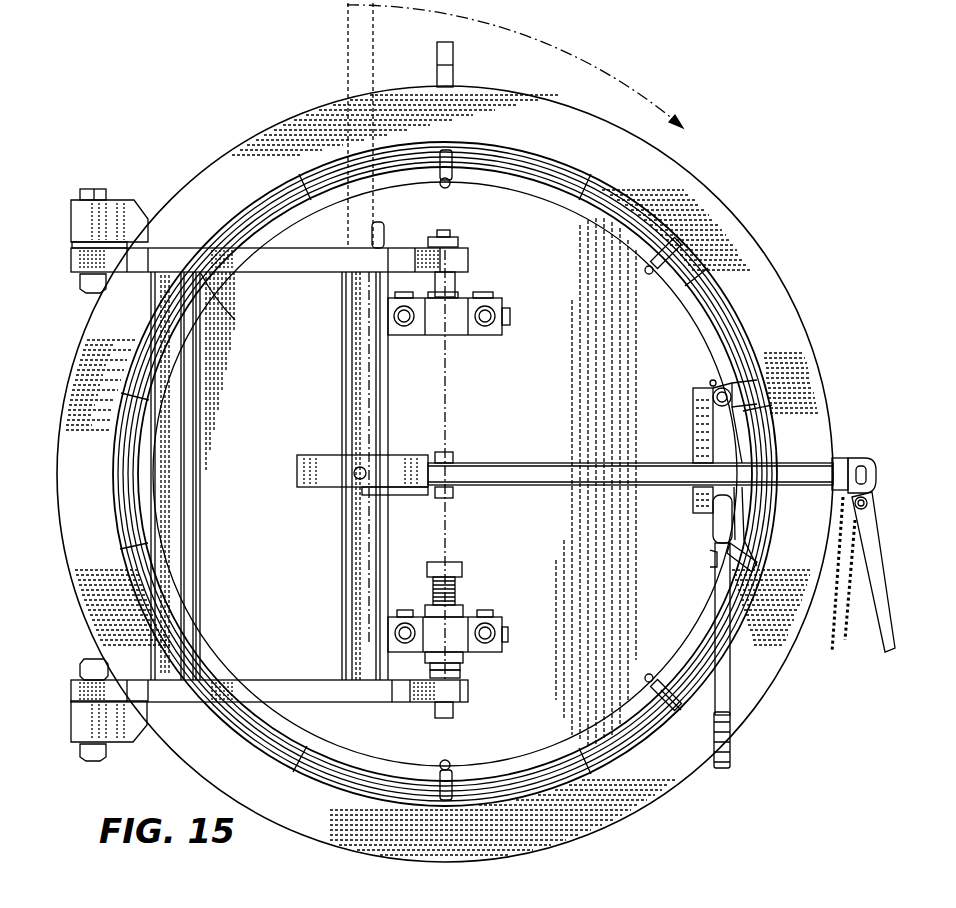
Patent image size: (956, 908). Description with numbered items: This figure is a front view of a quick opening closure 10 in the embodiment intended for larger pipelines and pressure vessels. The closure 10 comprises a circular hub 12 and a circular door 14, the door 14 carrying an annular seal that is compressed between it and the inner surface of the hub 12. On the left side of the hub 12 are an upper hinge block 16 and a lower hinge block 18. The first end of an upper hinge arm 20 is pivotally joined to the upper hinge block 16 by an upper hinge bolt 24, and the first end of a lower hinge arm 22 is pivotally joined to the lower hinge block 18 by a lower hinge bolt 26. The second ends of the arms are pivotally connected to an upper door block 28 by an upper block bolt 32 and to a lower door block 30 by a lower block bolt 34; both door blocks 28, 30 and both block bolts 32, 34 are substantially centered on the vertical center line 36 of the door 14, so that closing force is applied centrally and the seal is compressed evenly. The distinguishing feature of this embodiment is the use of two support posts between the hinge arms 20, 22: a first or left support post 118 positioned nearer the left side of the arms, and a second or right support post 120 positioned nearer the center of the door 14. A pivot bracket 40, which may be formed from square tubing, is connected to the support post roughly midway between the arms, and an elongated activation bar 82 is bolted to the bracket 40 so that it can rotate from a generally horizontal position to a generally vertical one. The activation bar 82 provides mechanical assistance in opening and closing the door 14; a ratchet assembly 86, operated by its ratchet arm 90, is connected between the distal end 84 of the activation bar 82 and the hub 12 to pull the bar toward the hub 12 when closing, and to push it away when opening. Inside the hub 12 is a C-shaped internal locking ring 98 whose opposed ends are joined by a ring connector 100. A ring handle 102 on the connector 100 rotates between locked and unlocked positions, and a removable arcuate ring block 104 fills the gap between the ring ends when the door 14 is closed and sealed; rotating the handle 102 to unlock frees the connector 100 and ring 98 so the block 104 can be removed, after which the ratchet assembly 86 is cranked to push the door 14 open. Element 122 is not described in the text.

The quick opening closure 10 is at (196, 156).
The circular hub 12 is at (697, 201).
The circular door 14 is at (672, 344).
The upper hinge block 16 is at (79, 224).
The lower hinge block 18 is at (76, 724).
The upper hinge arm 20 is at (132, 262).
The lower hinge arm 22 is at (200, 698).
The upper hinge bolt 24 is at (97, 187).
The lower hinge bolt 26 is at (80, 660).
The upper door block 28 is at (497, 329).
The lower door block 30 is at (501, 618).
The upper block bolt 32 is at (448, 278).
The lower block bolt 34 is at (455, 710).
The vertical center line 36 is at (449, 403).
The pivot bracket 40 is at (320, 492).
The activation bar 82 is at (346, 63).
The distal end of the activation bar 84 is at (842, 458).
The ratchet assembly 86 is at (879, 460).
The ratchet arm 90 is at (870, 527).
The internal locking ring 98 is at (557, 758).
The ring connector 100 is at (695, 412).
The ring handle 102 is at (730, 682).
The arcuate ring block 104 is at (737, 447).
The first or left support post 118 is at (188, 453).
The second or right support post 120 is at (348, 595).
The guide rail 122 is at (363, 420).